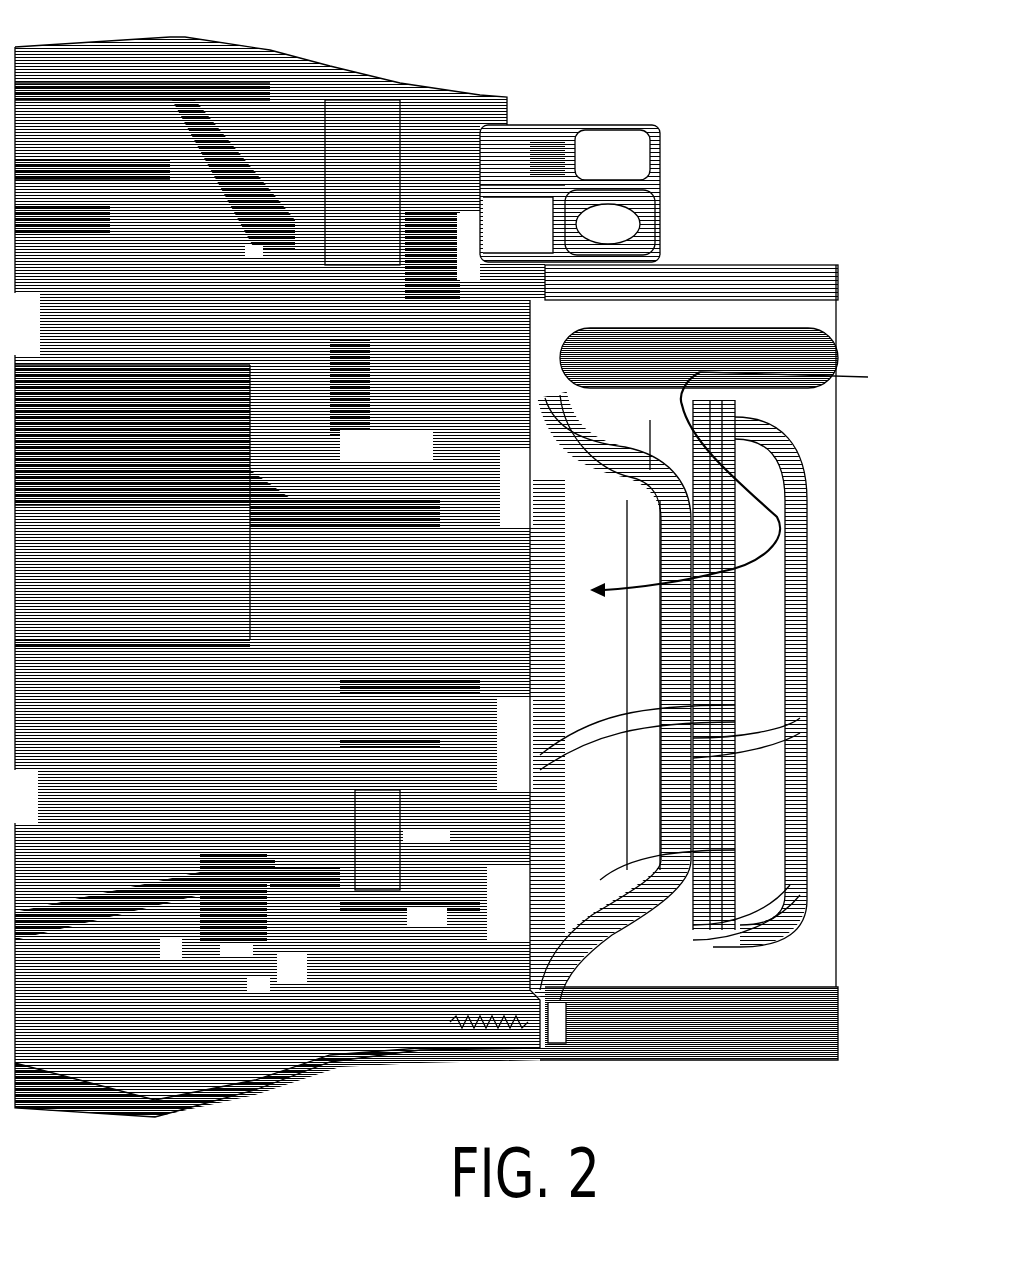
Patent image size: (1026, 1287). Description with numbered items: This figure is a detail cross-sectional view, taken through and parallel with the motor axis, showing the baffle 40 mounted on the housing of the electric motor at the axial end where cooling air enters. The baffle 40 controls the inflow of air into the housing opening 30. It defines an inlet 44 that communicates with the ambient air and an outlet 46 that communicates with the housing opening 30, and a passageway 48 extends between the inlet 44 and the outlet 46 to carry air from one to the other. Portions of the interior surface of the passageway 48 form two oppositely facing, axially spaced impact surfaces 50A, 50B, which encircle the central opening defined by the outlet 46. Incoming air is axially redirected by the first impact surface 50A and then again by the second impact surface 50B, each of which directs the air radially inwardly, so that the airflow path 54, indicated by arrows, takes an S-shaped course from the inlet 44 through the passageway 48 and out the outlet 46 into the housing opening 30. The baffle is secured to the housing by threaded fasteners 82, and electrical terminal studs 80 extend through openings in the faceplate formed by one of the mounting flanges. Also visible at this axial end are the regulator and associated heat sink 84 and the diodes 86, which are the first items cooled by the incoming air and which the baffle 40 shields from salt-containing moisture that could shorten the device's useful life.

The housing opening 30 is at (405, 447).
The baffle 40 is at (784, 258).
The inlet 44 is at (845, 342).
The outlet 46 is at (680, 795).
The passageway 48 is at (797, 340).
The first impact surface 50A is at (563, 394).
The second impact surface 50B is at (797, 455).
The airflow path 54 is at (777, 517).
The electrical terminal studs 80 is at (656, 200).
The threaded fasteners 82 is at (560, 1027).
The regulator and associated heat sink 84 is at (372, 255).
The diodes 86 is at (377, 880).